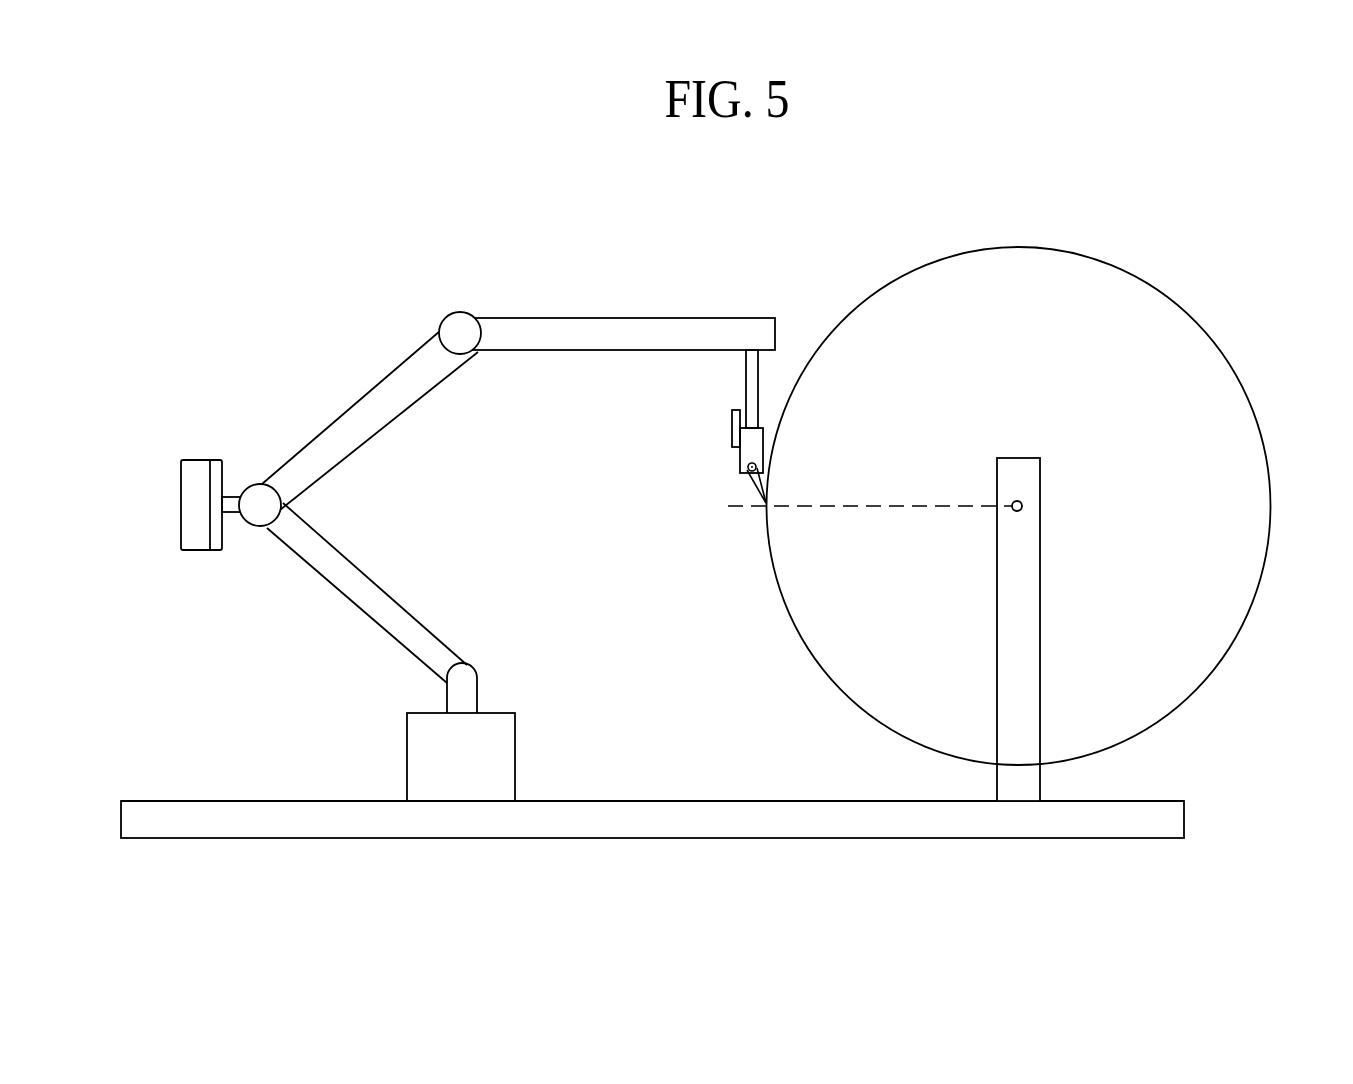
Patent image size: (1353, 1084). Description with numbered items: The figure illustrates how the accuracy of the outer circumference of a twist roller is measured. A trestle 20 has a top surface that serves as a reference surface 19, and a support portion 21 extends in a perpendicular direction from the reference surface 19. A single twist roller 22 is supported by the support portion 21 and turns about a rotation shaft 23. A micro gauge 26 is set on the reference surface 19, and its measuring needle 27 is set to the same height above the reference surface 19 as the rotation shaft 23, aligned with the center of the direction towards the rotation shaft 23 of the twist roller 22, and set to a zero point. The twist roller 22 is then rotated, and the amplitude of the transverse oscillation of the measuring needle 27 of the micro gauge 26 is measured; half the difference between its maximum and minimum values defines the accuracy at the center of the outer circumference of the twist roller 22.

The reference surface 19 is at (717, 801).
The trestle 20 is at (787, 827).
The support portion 21 is at (1030, 785).
The twist roller 22 is at (1197, 657).
The rotation shaft 23 is at (1015, 500).
The micro gauge 26 is at (337, 391).
The measuring needle 27 is at (767, 503).